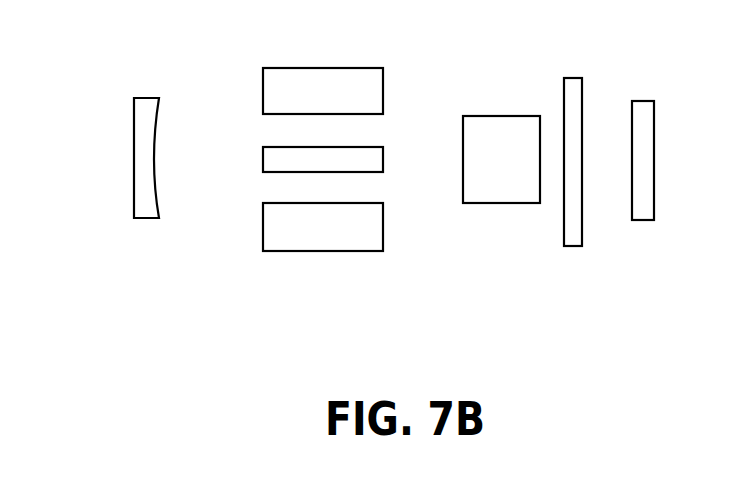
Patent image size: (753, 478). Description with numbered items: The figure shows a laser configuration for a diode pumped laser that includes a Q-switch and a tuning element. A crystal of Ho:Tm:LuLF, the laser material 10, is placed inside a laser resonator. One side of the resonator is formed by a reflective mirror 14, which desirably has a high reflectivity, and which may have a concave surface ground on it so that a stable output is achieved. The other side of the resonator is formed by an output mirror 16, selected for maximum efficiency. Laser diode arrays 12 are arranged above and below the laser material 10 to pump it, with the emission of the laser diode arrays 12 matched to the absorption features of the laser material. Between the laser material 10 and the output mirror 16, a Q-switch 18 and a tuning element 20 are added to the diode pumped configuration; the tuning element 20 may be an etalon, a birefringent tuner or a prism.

The laser material 10 is at (358, 147).
The laser diode arrays 12 is at (298, 67).
The reflective mirror 14 is at (133, 137).
The output mirror 16 is at (642, 101).
The Q-switch 18 is at (476, 116).
The tuning element 20 is at (573, 78).